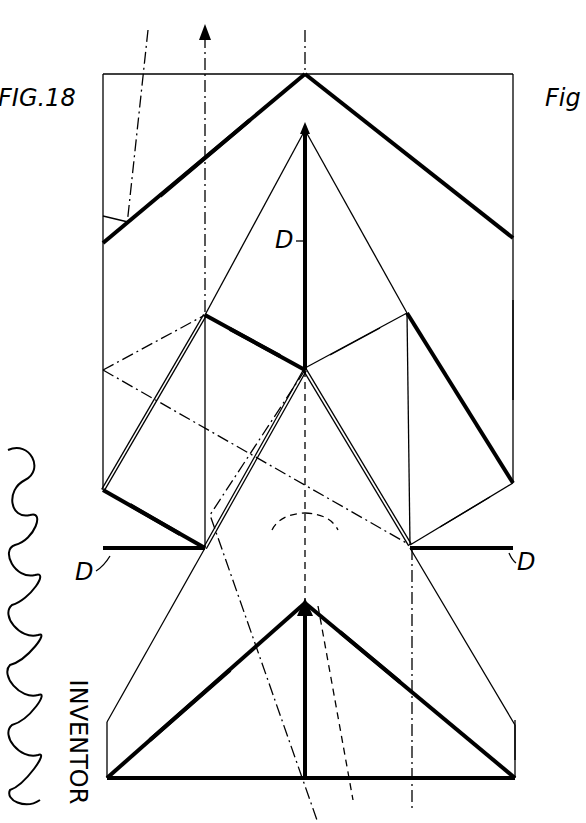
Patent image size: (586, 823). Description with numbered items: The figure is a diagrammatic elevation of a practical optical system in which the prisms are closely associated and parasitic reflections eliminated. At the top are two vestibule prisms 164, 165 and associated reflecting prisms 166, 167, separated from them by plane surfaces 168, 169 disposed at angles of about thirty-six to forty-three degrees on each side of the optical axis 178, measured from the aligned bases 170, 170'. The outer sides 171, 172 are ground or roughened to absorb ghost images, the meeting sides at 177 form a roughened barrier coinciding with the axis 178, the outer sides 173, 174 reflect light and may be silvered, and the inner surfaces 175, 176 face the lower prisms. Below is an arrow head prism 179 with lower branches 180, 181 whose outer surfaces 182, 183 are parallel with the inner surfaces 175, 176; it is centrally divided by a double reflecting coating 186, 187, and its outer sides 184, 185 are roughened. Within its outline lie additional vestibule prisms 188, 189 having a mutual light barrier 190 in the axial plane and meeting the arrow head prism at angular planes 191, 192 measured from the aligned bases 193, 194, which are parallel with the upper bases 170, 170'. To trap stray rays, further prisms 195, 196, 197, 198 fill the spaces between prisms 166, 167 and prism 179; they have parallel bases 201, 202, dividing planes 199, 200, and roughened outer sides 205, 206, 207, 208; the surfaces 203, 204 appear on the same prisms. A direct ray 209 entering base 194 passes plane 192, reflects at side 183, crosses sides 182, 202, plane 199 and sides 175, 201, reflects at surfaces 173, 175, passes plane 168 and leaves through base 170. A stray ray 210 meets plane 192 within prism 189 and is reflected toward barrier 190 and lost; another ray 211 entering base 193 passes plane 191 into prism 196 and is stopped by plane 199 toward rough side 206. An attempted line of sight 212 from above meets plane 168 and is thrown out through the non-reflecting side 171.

The vestibule prism 164 is at (204, 158).
The vestibule prism 165 is at (409, 156).
The reflecting prism 166 is at (154, 318).
The reflecting prism 167 is at (454, 315).
The plane surface 168 is at (240, 134).
The plane surface 169 is at (414, 164).
The base of prism 170 is at (204, 54).
The base of prism 170' is at (409, 54).
The outer side 171 is at (101, 181).
The outer side 172 is at (514, 155).
The outer side 173 is at (102, 314).
The outer side 174 is at (507, 300).
The inner surface 175 is at (224, 293).
The inner surface 176 is at (379, 252).
The meeting sides 177 is at (307, 116).
The optical axis 178 is at (310, 51).
The arrow head prism 179 is at (172, 600).
The lower branch 180 is at (151, 714).
The lower branch 181 is at (467, 714).
The outer surface 182 is at (148, 648).
The outer surface 183 is at (462, 626).
The outer side 184 is at (107, 782).
The outer side 185 is at (517, 739).
The double reflecting coating 186 is at (276, 532).
The double reflecting coating 187 is at (330, 532).
The vestibule prism 188 is at (194, 713).
The vestibule prism 189 is at (370, 674).
The light barrier 190 is at (303, 693).
The angular plane 191 is at (251, 666).
The angular plane 192 is at (380, 638).
The base 193 is at (194, 790).
The base 194 is at (513, 779).
The prism 195 is at (192, 478).
The prism 196 is at (253, 360).
The prism 197 is at (355, 362).
The prism 198 is at (455, 500).
The dividing plane 199 is at (205, 409).
The dividing plane 200 is at (407, 421).
The base 201 is at (128, 441).
The base 202 is at (241, 481).
The edge 203 is at (372, 487).
The fold line 204 is at (466, 412).
The outer side 205 is at (147, 520).
The outer side 206 is at (270, 337).
The outer side 207 is at (473, 512).
The outer side 208 is at (352, 346).
The direct ray 209 is at (412, 800).
The stray ray 210 is at (345, 771).
The ray 211 is at (308, 800).
The line of sight 212 is at (145, 57).